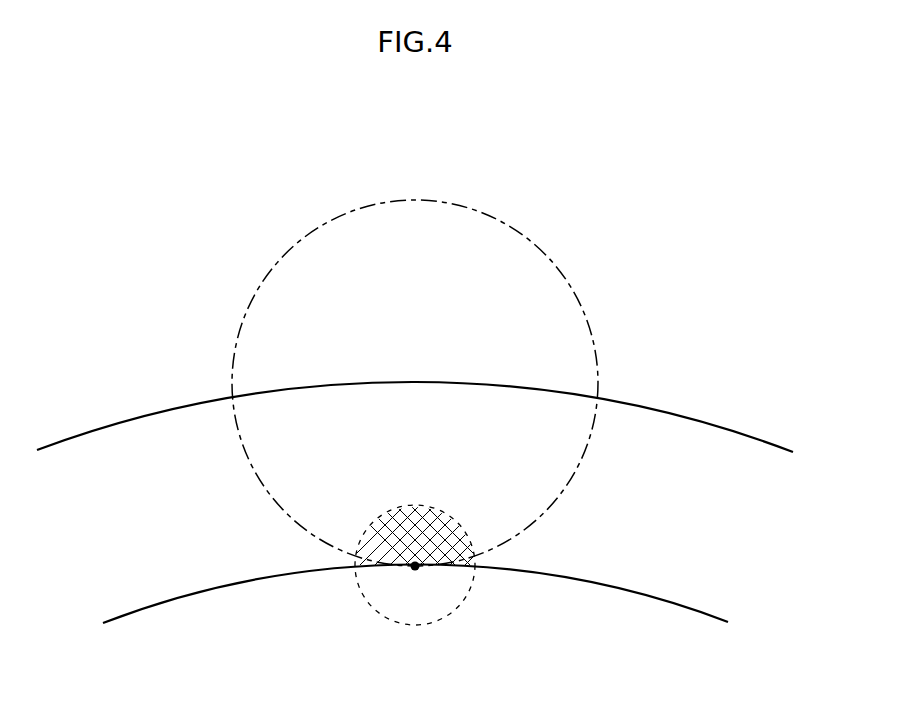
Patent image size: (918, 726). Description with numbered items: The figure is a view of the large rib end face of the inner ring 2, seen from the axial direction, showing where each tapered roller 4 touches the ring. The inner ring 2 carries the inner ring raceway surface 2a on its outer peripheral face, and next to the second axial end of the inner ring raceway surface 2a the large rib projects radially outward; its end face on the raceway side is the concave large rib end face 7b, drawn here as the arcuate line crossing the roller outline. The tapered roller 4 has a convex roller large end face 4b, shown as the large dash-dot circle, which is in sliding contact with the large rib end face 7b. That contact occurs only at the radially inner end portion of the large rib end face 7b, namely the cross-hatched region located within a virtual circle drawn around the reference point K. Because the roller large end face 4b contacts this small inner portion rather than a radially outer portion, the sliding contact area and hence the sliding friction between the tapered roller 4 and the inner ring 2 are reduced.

The tapered roller 4 is at (290, 248).
The roller large end face 4b is at (538, 281).
The large rib end face 7b is at (655, 430).
The inner ring 2 is at (137, 420).
The inner ring raceway surface 2a is at (604, 586).
The reference point K is at (415, 570).